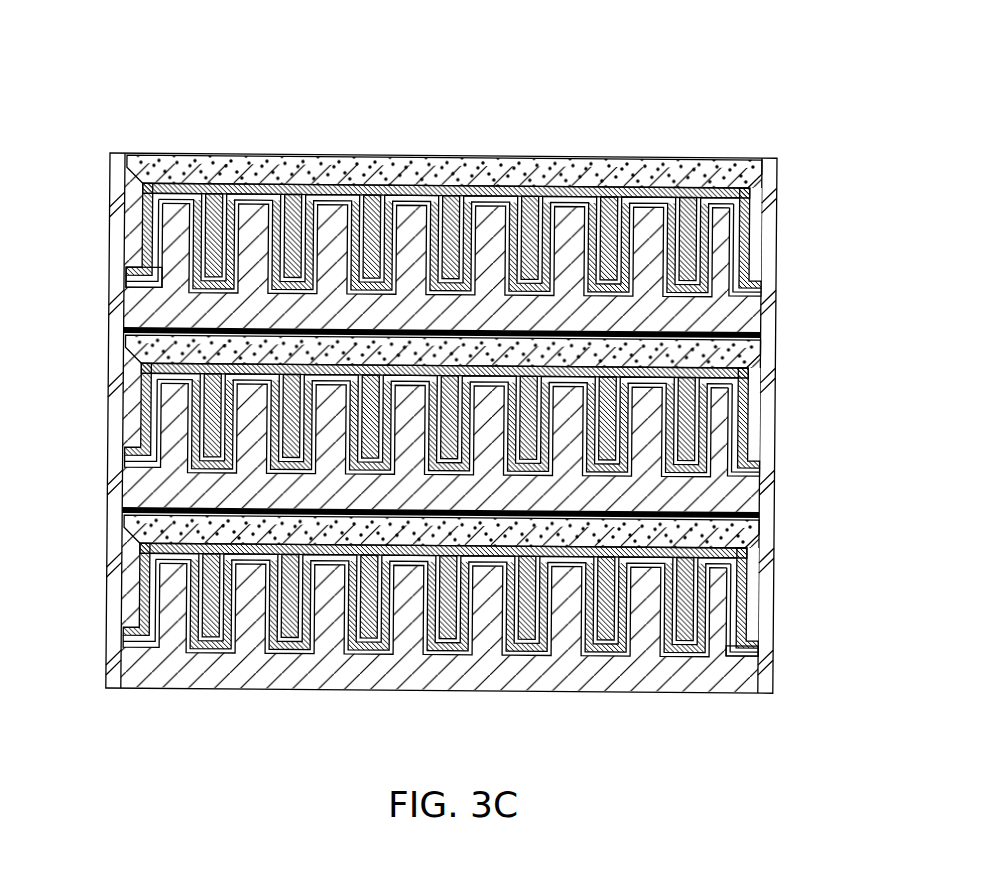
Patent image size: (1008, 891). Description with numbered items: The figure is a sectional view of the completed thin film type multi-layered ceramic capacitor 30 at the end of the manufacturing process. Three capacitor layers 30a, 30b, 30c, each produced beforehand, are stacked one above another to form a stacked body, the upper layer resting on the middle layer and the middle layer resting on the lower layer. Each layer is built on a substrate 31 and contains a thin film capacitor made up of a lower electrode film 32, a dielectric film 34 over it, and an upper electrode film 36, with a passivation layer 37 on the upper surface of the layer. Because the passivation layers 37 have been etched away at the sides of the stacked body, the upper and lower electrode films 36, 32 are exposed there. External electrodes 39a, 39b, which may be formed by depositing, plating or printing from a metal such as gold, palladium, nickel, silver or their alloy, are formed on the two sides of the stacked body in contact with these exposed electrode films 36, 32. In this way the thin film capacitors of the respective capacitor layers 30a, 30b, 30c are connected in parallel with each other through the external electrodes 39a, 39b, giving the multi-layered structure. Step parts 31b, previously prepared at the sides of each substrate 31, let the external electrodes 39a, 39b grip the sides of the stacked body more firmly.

The thin film type multi-layered ceramic capacitor 30 is at (452, 356).
The capacitor layer 30a is at (467, 214).
The capacitor layer 30b is at (760, 490).
The capacitor layer 30c is at (760, 667).
The substrate 31 is at (135, 305).
The step part 31b is at (140, 268).
The lower electrode film 32 is at (708, 192).
The dielectric film 34 is at (560, 188).
The upper electrode film 36 is at (410, 183).
The passivation layer 37 is at (240, 160).
The external electrode 39a is at (120, 408).
The external electrode 39b is at (776, 248).